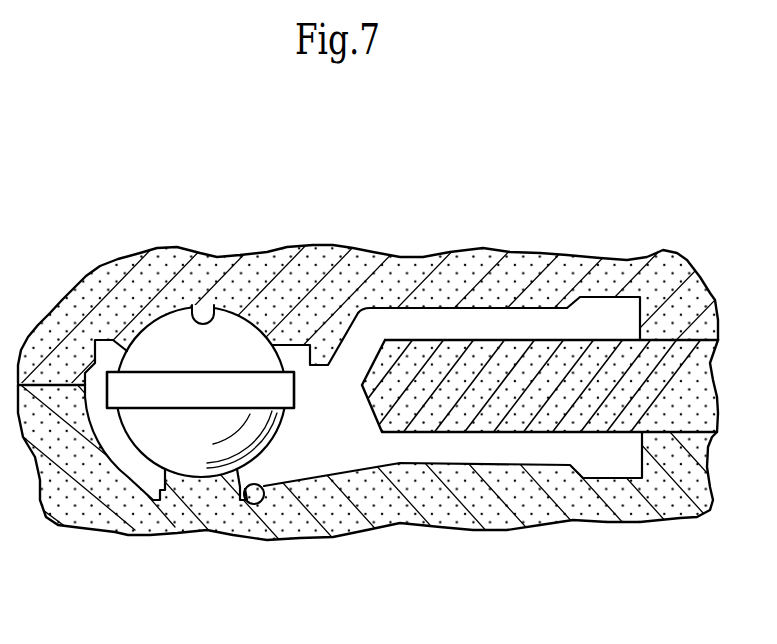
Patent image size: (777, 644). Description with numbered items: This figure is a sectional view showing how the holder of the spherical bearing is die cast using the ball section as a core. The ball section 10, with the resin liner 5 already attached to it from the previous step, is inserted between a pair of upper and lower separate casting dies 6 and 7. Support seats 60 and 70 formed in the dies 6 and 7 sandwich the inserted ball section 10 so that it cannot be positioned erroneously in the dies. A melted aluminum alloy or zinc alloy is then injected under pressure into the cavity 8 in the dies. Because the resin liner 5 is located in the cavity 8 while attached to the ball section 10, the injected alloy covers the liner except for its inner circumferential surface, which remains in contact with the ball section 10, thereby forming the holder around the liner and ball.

The resin liner 5 is at (162, 378).
The upper casting die 6 is at (272, 252).
The lower casting die 7 is at (348, 526).
The cavity 8 is at (367, 333).
The ball section 10 is at (123, 470).
The support seat 60 is at (195, 307).
The support seat 70 is at (255, 507).